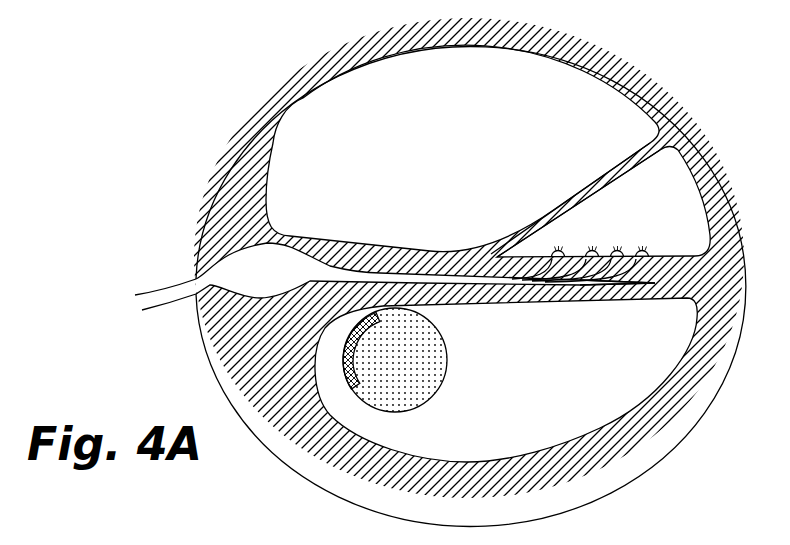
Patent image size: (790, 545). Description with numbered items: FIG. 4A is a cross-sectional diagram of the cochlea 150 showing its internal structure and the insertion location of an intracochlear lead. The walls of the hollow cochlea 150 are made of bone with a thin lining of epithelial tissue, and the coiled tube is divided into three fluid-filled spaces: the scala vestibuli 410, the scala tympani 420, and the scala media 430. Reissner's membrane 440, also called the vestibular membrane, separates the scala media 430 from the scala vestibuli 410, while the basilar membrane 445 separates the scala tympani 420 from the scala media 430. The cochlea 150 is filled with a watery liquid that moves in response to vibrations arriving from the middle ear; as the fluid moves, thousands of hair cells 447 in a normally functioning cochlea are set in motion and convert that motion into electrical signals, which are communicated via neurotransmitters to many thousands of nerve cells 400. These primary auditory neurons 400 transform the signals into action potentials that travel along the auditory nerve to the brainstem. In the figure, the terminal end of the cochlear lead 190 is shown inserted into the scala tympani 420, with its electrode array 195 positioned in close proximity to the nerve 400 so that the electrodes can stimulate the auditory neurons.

The cochlea 150 is at (270, 90).
The scala vestibuli 410 is at (403, 161).
The scala media 430 is at (683, 211).
The Reissner's membrane 440 is at (598, 187).
The scala tympani 420 is at (585, 373).
The nerve cells 400 is at (180, 288).
The basilar membrane 445 is at (670, 280).
The hair cells 447 is at (618, 249).
The cochlear lead 190 is at (417, 385).
The electrode array 195 is at (348, 384).